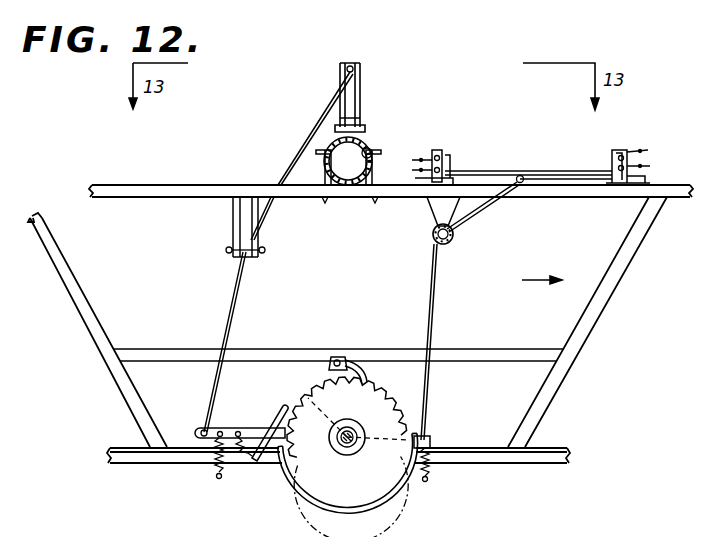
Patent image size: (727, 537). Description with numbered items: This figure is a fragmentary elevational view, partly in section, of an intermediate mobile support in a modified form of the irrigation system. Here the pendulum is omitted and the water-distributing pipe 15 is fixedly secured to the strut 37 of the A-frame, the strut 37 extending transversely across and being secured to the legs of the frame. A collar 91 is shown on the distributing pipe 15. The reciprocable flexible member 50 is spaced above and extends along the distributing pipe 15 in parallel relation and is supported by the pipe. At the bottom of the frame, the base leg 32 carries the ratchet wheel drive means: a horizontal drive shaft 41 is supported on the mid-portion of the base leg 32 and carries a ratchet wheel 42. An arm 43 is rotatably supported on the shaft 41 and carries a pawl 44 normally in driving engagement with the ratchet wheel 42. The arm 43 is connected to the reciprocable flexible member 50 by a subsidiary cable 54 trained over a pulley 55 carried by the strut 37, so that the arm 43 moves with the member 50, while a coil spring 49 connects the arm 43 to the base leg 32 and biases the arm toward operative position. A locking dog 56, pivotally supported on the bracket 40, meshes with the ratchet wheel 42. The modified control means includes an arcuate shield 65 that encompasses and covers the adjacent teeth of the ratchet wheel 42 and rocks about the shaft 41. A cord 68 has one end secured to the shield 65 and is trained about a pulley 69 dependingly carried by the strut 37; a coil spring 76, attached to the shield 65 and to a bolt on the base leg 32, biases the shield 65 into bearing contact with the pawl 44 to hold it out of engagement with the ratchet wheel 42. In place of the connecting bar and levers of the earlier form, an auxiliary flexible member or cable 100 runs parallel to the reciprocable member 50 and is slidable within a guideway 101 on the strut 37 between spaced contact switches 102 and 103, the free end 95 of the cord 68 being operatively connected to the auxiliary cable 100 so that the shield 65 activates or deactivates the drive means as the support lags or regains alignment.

The distributing pipe 15 is at (368, 141).
The base leg 32 is at (519, 460).
The strut 37 is at (541, 198).
The bracket 40 is at (494, 353).
The drive shaft 41 is at (343, 449).
The ratchet wheel 42 is at (396, 396).
The arm 43 is at (230, 428).
The pawl 44 is at (280, 411).
The coil spring 49 is at (215, 462).
The reciprocable flexible member 50 is at (358, 66).
The subsidiary cable 54 is at (233, 323).
The pulley 55 is at (252, 255).
The locking dog 56 is at (340, 357).
The arcuate shield 65 is at (390, 496).
The cord 68 is at (432, 289).
The pulley 69 is at (454, 237).
The coil spring 76 is at (432, 462).
The collar 91 is at (371, 152).
The free end of the cable 95 is at (432, 440).
The auxiliary flexible member 100 is at (521, 176).
The guideway 101 is at (555, 170).
The contact switch 102 is at (444, 153).
The contact switch 103 is at (619, 151).